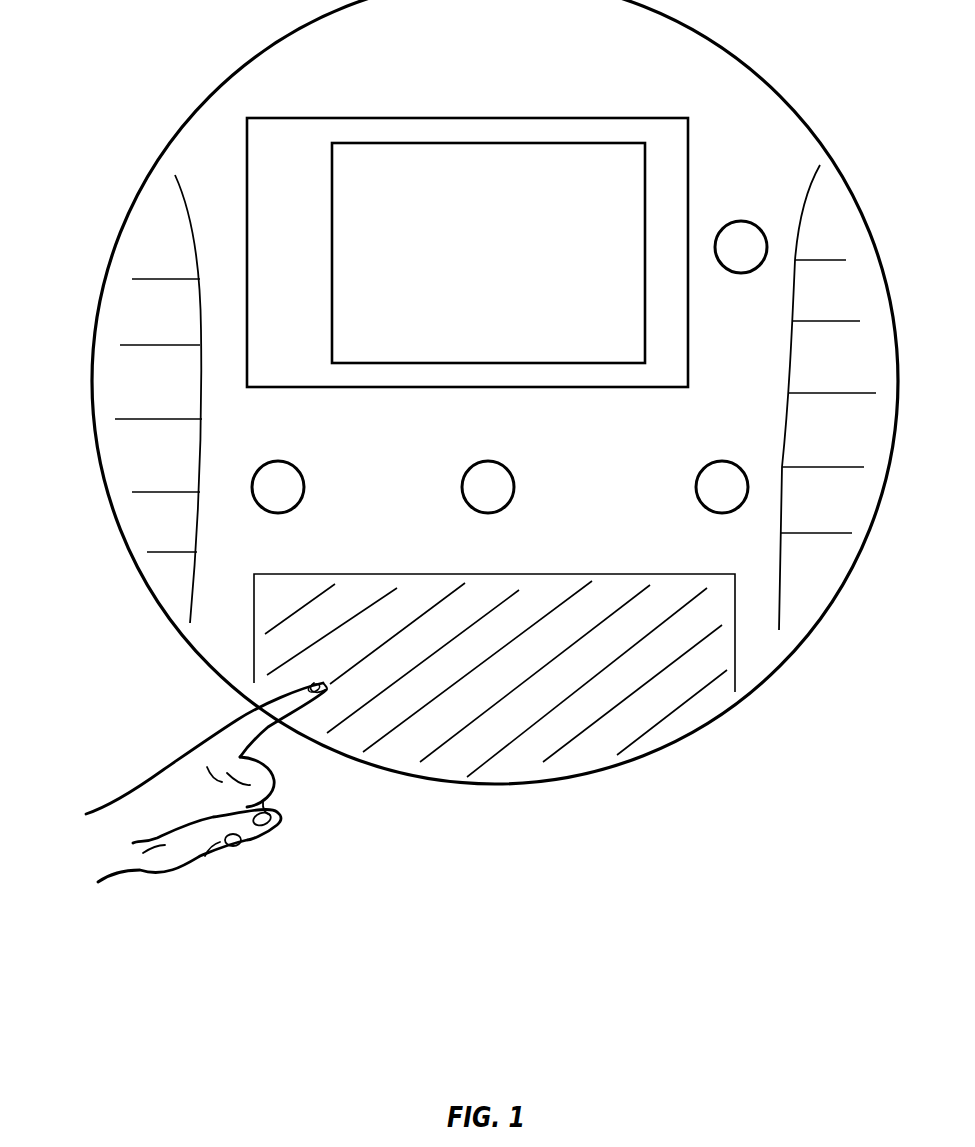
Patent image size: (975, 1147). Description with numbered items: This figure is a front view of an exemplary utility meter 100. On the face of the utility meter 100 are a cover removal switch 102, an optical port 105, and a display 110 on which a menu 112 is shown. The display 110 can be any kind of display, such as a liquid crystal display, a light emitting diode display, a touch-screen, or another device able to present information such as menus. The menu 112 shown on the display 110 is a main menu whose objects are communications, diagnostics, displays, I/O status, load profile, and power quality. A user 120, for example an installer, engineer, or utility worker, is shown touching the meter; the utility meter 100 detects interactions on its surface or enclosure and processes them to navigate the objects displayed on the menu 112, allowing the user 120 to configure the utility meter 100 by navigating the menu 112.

The utility meter 100 is at (244, 63).
The cover removal switch 102 is at (749, 221).
The optical port 105 is at (489, 460).
The display 110 is at (392, 116).
The menu 112 is at (331, 192).
The user 120 is at (140, 747).